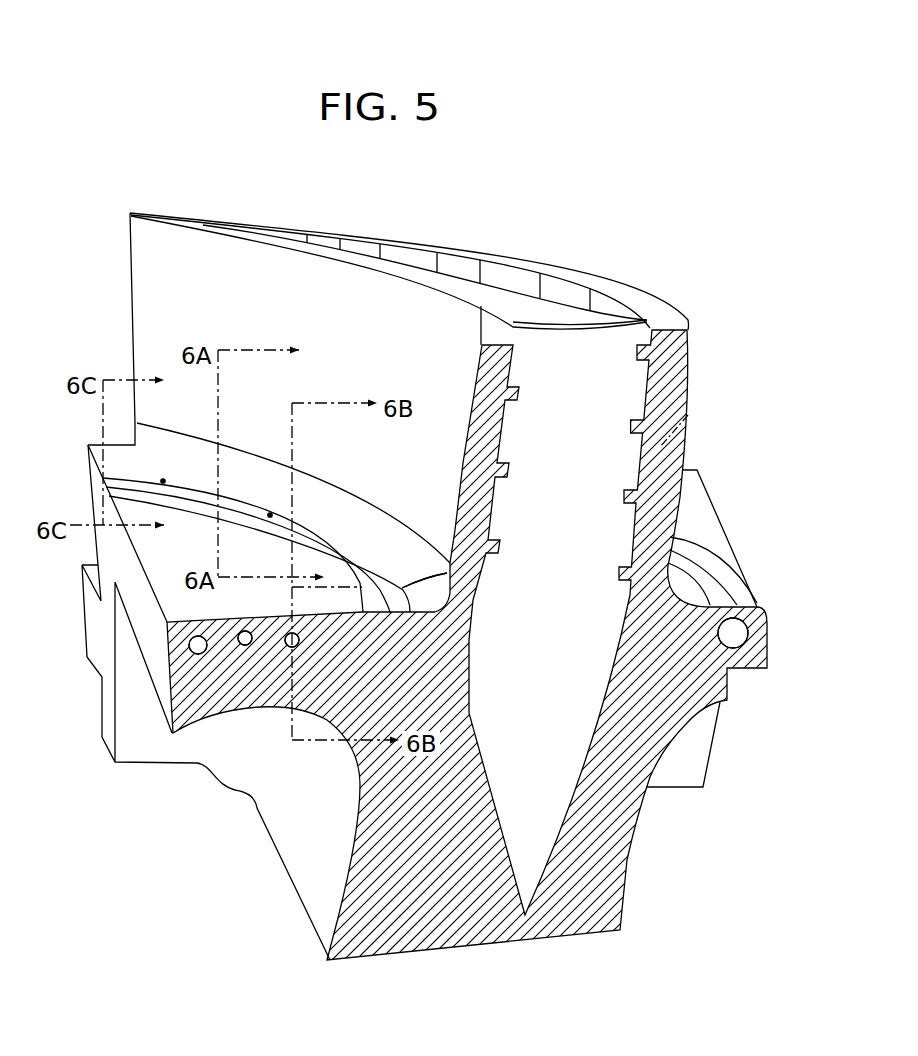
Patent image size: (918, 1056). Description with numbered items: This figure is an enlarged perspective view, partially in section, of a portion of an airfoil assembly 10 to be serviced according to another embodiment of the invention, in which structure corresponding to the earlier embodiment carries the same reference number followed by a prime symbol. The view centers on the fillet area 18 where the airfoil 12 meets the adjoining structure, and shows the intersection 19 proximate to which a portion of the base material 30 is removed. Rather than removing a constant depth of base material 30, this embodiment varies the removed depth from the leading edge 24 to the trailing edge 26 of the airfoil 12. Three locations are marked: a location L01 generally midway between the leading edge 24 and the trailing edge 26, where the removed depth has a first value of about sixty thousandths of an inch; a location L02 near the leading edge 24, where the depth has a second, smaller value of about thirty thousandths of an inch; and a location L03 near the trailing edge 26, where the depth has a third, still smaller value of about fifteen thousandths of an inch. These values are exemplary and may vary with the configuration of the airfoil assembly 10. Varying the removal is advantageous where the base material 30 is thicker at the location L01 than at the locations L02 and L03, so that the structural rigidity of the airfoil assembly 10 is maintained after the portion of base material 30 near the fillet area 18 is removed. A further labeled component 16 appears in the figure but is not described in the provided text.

The airfoil assembly 10 is at (593, 206).
The airfoil 12 is at (691, 357).
The platform 16 is at (195, 732).
The fillet area 18 is at (407, 570).
The intersection 19 is at (623, 623).
The leading edge 24 is at (690, 414).
The trailing edge 26 is at (131, 262).
The base material 30 is at (181, 268).
The location generally midway between the leading and trailing edges L01 is at (270, 515).
The location near the leading edge L02 is at (403, 588).
The location near the trailing edge L03 is at (163, 481).